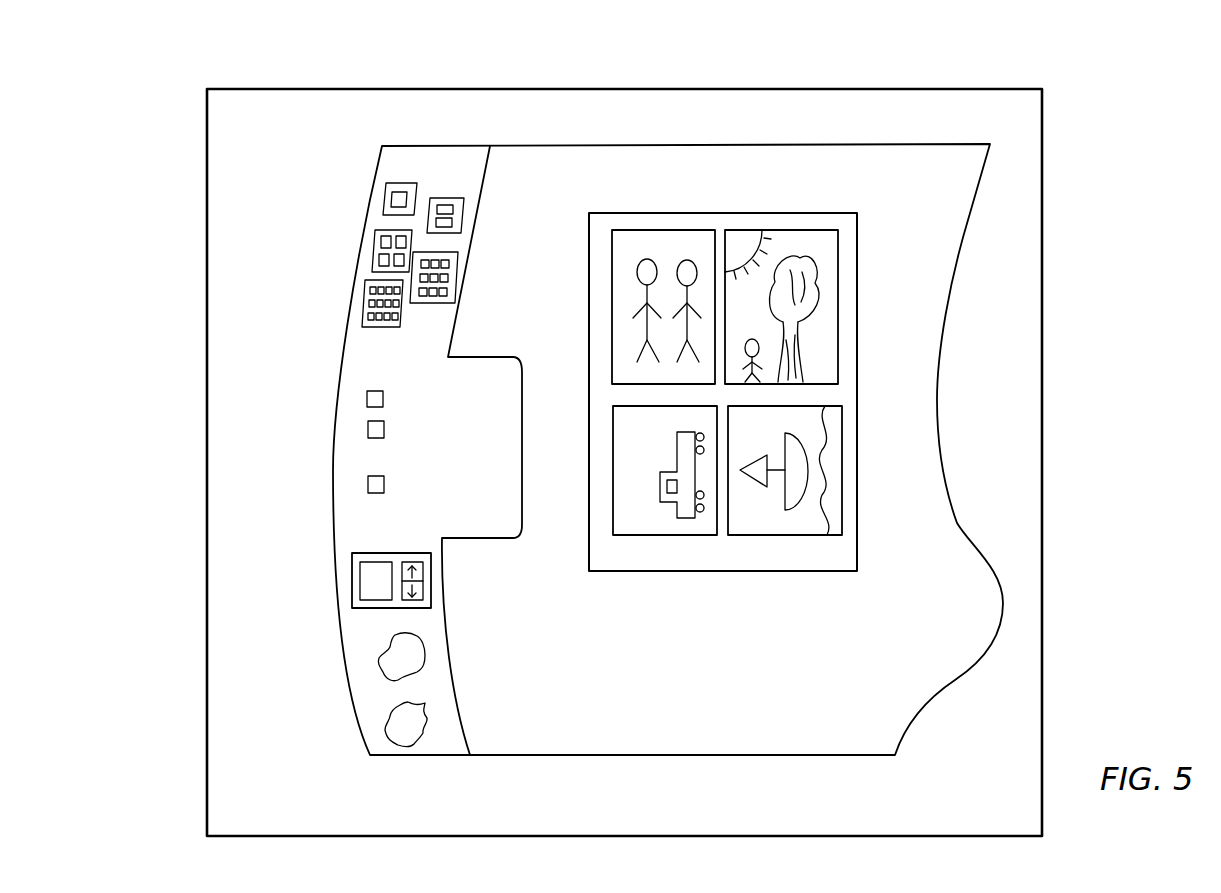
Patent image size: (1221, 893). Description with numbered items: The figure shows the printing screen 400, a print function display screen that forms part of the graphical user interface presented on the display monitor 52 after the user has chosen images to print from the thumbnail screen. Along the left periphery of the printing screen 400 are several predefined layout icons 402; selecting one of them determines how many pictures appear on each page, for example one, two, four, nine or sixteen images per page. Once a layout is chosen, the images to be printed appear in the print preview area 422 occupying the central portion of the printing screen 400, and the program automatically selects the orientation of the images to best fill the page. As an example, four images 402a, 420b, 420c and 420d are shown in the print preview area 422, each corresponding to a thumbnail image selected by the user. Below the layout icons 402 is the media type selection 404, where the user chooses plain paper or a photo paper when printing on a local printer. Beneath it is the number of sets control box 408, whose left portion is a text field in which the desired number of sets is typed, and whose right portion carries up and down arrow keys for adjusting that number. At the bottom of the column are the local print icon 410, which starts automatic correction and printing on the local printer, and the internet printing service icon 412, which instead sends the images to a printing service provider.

The display monitor 52 is at (538, 88).
The printing screen 400 is at (632, 143).
The layout icons 402 is at (402, 183).
The image 402a is at (612, 282).
The media type selection 404 is at (340, 398).
The number of sets control box 408 is at (443, 558).
The local print icon 410 is at (380, 657).
The internet printing service icon 412 is at (385, 720).
The image 420b is at (805, 222).
The image 420c is at (613, 442).
The image 420d is at (842, 438).
The print preview area 422 is at (705, 198).